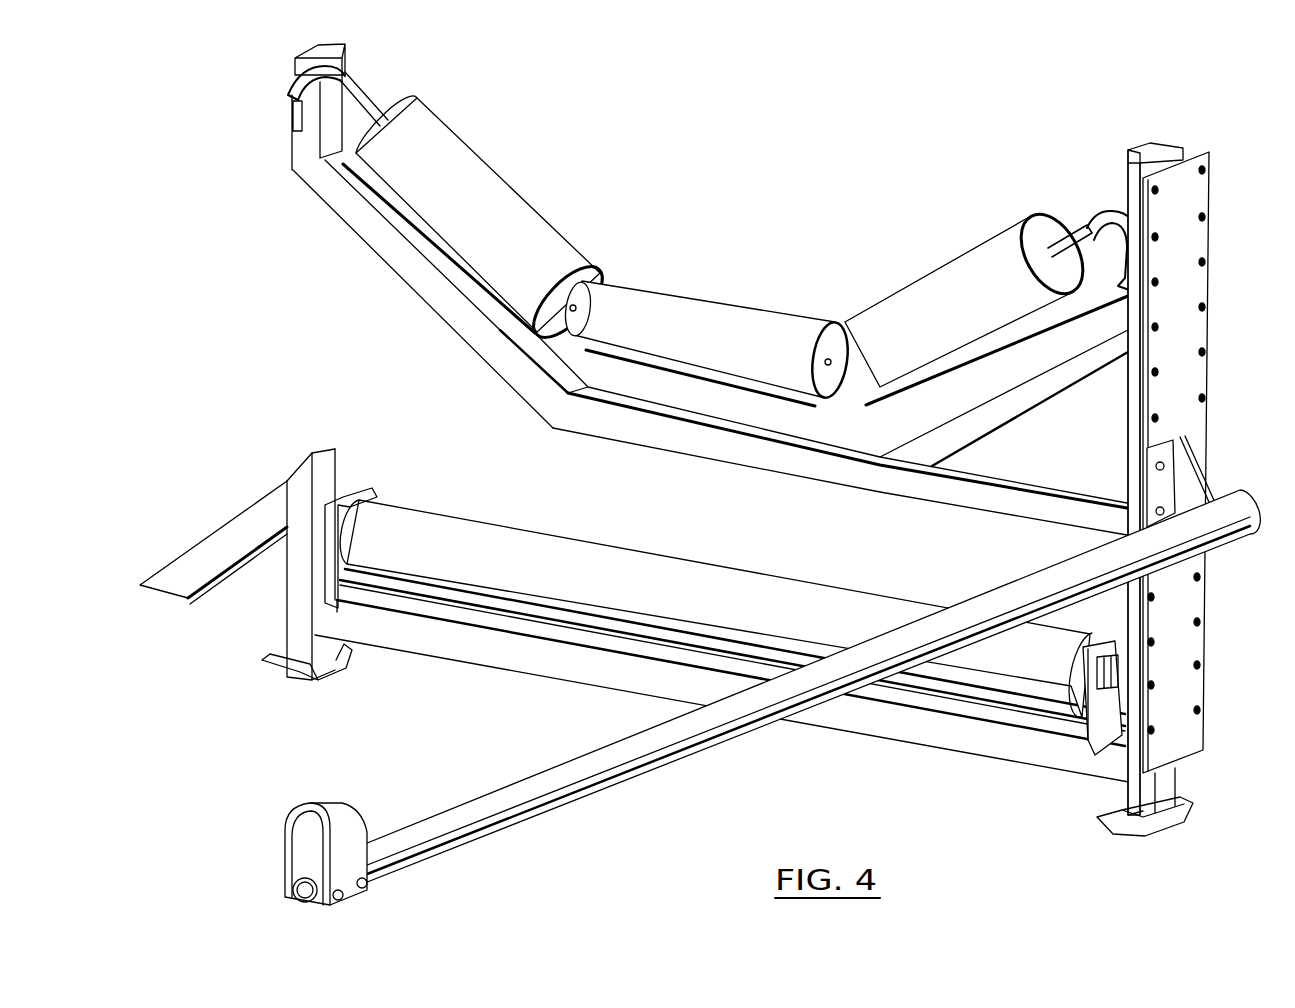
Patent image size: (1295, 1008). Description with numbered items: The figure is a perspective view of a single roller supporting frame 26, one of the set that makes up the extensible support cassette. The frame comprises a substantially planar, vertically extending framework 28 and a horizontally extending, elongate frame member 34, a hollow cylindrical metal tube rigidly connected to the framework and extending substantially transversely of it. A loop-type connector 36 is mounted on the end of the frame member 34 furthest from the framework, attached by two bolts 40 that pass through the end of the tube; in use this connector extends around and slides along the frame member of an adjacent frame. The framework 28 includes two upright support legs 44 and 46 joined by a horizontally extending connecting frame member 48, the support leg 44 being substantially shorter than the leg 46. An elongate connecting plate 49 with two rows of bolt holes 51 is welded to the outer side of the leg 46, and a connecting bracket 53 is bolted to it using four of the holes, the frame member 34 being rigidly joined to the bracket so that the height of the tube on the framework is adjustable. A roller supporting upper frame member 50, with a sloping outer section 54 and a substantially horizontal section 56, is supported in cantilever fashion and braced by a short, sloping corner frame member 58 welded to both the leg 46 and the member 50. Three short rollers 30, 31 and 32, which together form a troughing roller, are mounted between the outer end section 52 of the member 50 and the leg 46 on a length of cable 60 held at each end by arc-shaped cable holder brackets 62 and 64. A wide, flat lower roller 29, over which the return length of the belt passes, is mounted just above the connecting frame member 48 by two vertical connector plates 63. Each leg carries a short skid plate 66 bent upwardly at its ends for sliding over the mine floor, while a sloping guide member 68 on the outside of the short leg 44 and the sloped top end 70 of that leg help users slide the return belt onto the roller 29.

The roller supporting frame 26 is at (414, 333).
The framework 28 is at (1185, 250).
The lower roller 29 is at (668, 554).
The upper roller 30 is at (492, 188).
The upper roller 31 is at (708, 306).
The upper roller 32 is at (926, 286).
The elongate frame member 34 is at (644, 781).
The connector 36 is at (340, 808).
The bolts 40 is at (367, 885).
The support leg 44 is at (296, 598).
The support leg 46 is at (1125, 432).
The connecting frame member 48 is at (583, 679).
The connecting plate 49 is at (1187, 297).
The upper frame member 50 is at (663, 434).
The bolt holes 51 is at (1155, 373).
The outer end section 52 is at (297, 150).
The connecting bracket 53 is at (1218, 470).
The sloping outer section 54 is at (384, 247).
The horizontal section 56 is at (869, 474).
The corner frame member or brace 58 is at (998, 401).
The cable 60 is at (1078, 236).
The cable holder bracket 62 is at (300, 88).
The connector plates 63 is at (372, 489).
The cable holder bracket 64 is at (1100, 218).
The skid plate 66 is at (288, 676).
The sloping guide member 68 is at (221, 536).
The top end 70 is at (311, 455).